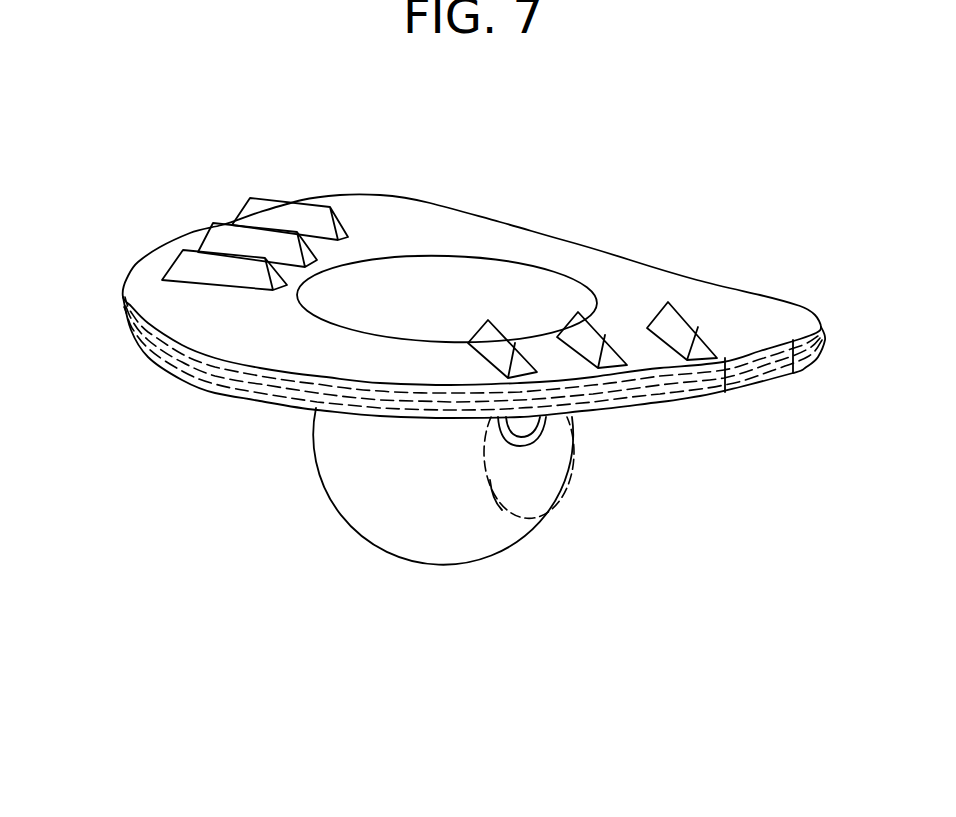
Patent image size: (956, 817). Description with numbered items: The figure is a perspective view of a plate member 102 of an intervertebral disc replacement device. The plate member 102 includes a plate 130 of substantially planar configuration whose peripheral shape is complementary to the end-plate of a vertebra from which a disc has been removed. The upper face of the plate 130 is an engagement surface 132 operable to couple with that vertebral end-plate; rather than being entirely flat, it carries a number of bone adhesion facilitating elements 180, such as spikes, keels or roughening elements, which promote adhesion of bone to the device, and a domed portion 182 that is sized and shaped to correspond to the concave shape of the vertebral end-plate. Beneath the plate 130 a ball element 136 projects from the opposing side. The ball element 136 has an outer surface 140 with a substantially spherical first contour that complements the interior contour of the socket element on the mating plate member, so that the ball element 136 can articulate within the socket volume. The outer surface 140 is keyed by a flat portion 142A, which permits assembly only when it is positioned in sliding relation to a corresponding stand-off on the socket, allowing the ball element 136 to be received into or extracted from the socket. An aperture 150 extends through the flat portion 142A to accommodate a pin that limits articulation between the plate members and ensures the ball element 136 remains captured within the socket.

The plate member 102 is at (497, 90).
The plate 130 is at (227, 372).
The engagement surface 132 is at (755, 317).
The ball element 136 is at (250, 481).
The outer surface 140 is at (388, 515).
The flat portion 142A is at (533, 496).
The aperture 150 is at (531, 436).
The bone adhesion facilitating elements 180 is at (350, 218).
The domed portion 182 is at (512, 277).